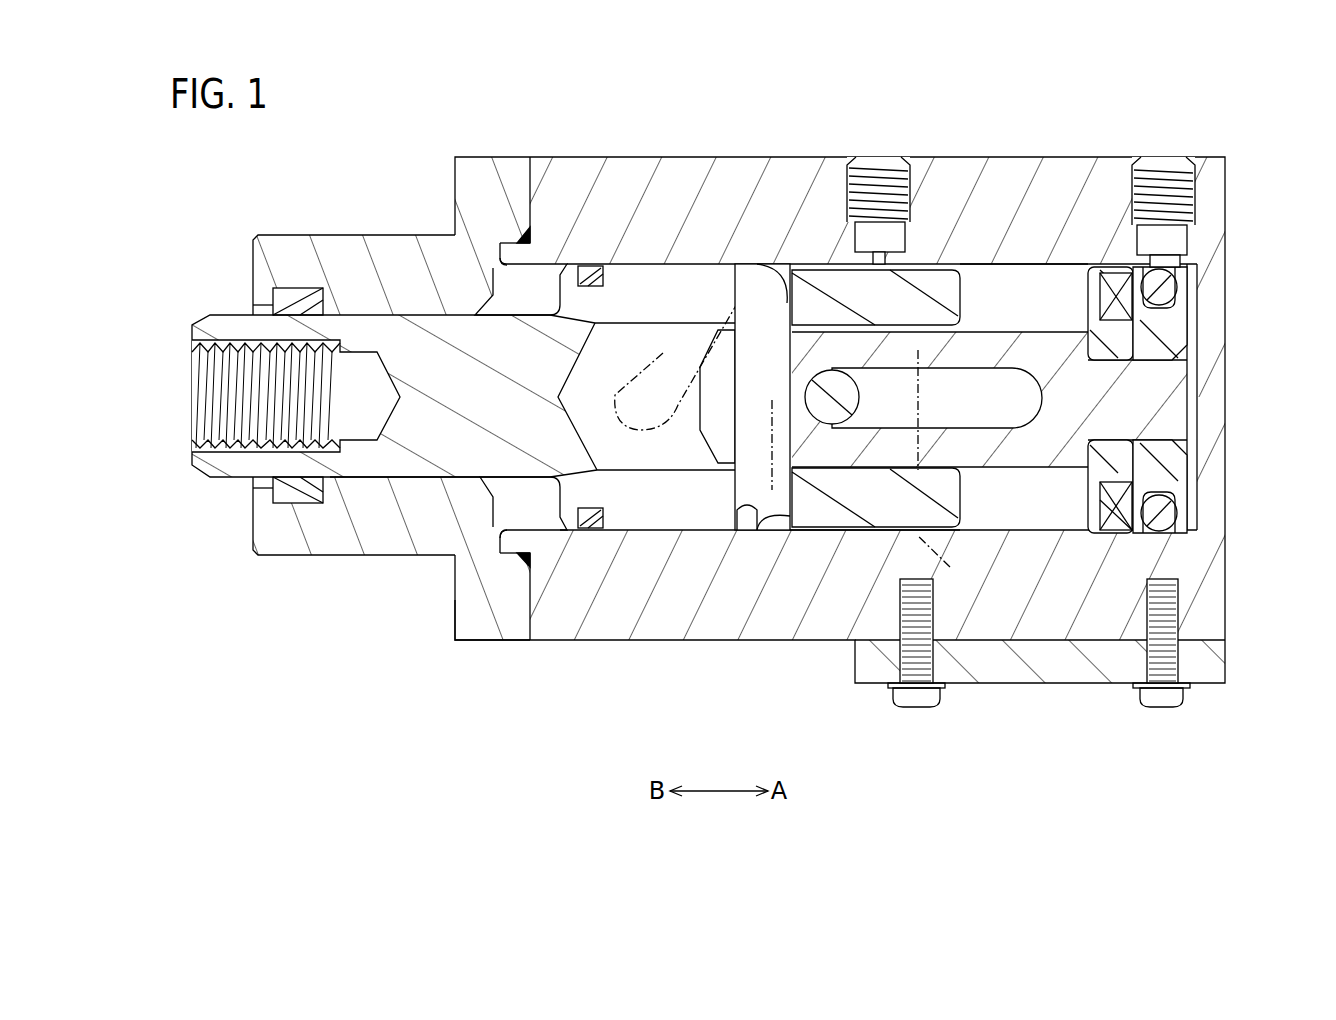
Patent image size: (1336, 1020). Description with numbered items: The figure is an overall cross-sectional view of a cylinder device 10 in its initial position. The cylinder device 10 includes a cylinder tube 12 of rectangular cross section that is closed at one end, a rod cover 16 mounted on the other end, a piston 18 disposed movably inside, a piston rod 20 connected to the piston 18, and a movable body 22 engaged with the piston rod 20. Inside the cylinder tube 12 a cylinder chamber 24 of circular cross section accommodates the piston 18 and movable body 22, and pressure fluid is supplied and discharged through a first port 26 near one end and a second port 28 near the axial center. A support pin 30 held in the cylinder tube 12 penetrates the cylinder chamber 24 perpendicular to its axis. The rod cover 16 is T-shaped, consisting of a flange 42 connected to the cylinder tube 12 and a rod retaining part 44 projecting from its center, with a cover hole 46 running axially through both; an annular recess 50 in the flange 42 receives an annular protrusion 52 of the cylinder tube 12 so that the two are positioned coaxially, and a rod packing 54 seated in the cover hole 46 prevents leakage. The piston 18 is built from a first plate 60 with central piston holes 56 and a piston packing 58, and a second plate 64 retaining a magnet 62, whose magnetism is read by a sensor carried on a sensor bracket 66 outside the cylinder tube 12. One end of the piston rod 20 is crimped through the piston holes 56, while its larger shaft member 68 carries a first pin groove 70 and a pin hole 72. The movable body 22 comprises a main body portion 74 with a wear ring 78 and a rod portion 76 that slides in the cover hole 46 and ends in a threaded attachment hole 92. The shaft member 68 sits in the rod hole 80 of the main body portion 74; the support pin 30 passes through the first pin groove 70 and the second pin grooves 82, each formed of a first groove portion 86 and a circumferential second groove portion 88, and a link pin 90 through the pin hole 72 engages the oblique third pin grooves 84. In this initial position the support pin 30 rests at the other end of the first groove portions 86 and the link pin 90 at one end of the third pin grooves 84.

The cylinder device 10 is at (344, 119).
The cylinder tube 12 is at (591, 150).
The rod cover 16 is at (331, 566).
The piston 18 is at (1080, 503).
The piston rod 20 is at (992, 326).
The movable body 22 is at (645, 508).
The cylinder chamber 24 is at (978, 283).
The first port 26 is at (1163, 185).
The second port 28 is at (876, 172).
The support pin 30 is at (818, 392).
The flange 42 is at (496, 620).
The rod retaining part 44 is at (352, 252).
The cover hole 46 is at (402, 468).
The annular recess 50 is at (521, 398).
The annular protrusion 52 is at (521, 240).
The rod packing 54 is at (300, 298).
The piston holes 56 is at (1142, 440).
The piston packing 58 is at (1162, 518).
The first plate 60 is at (1173, 340).
The magnet 62 is at (1118, 290).
The second plate 64 is at (1088, 285).
The sensor bracket 66 is at (1040, 465).
The shaft member 68 is at (1015, 447).
The first pin groove 70 is at (1025, 409).
The pin hole 72 is at (746, 398).
The main body portion 74 is at (842, 508).
The rod portion 76 is at (231, 482).
The wear ring 78 is at (592, 532).
The rod hole 80 is at (640, 326).
The second pin grooves 82 is at (900, 412).
The third pin grooves 84 is at (767, 290).
The first groove portion 86 is at (887, 383).
The second groove portion 88 is at (946, 558).
The link pin 90 is at (767, 533).
The attachment hole 92 is at (225, 403).